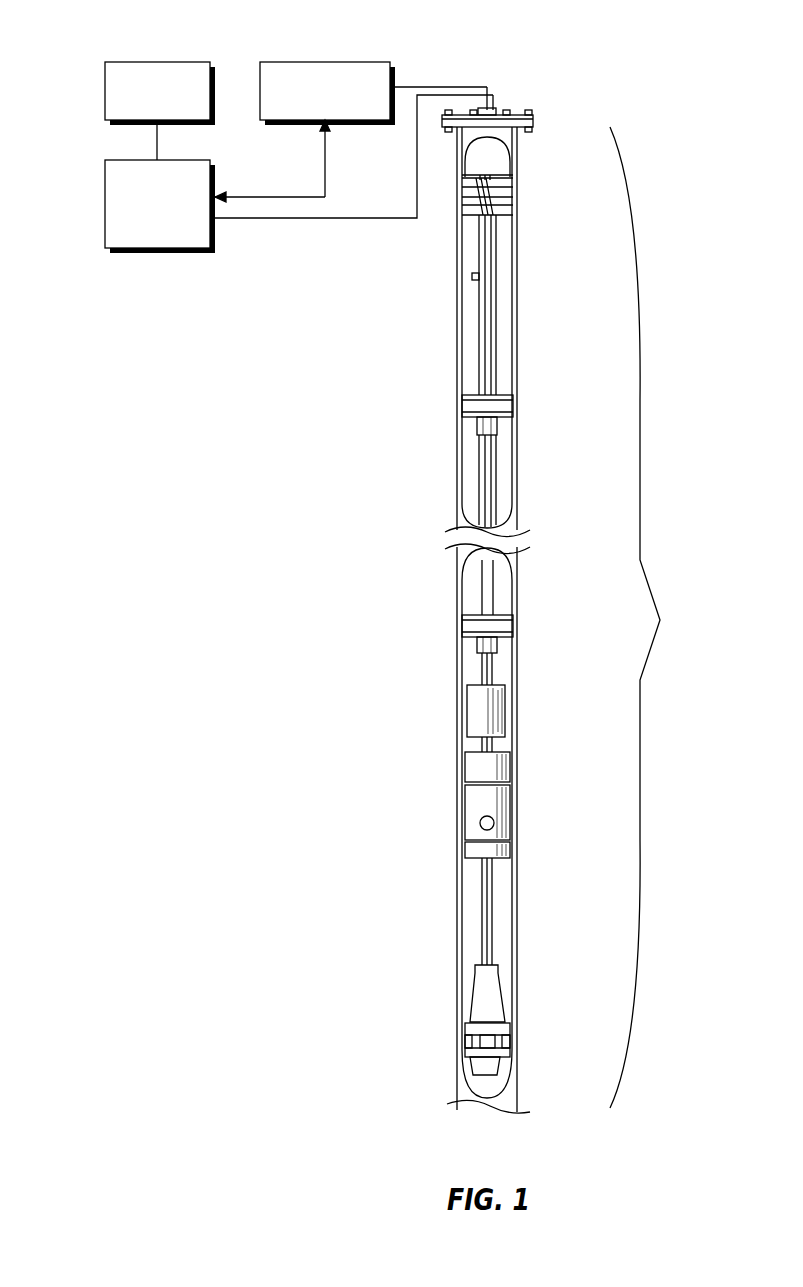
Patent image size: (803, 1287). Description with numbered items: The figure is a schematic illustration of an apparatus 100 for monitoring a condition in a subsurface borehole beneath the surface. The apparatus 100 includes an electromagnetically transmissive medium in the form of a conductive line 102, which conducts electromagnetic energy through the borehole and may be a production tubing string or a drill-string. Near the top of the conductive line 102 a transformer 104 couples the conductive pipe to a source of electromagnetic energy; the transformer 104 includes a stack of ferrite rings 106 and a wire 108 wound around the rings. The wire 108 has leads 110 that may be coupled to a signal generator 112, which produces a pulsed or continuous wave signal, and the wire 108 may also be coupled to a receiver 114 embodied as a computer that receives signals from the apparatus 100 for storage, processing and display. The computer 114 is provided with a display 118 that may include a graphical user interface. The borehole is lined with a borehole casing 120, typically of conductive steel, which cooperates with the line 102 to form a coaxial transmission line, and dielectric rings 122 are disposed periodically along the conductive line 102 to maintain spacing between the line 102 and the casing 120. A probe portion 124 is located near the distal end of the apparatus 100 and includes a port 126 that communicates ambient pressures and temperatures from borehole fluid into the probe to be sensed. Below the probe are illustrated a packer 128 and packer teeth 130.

The apparatus 100 is at (658, 617).
The conductive line 102 is at (478, 255).
The transformer 104 is at (513, 211).
The ferrite rings 106 is at (505, 187).
The wire 108 is at (480, 213).
The leads 110 is at (493, 95).
The signal generator 112 is at (280, 62).
The receiver 114 is at (107, 160).
The display 118 is at (107, 62).
The borehole casing 120 is at (515, 140).
The dielectric rings 122 is at (463, 408).
The probe portion 124 is at (510, 825).
The port 126 is at (480, 823).
The packer 128 is at (510, 1052).
The packer teeth 130 is at (487, 1045).